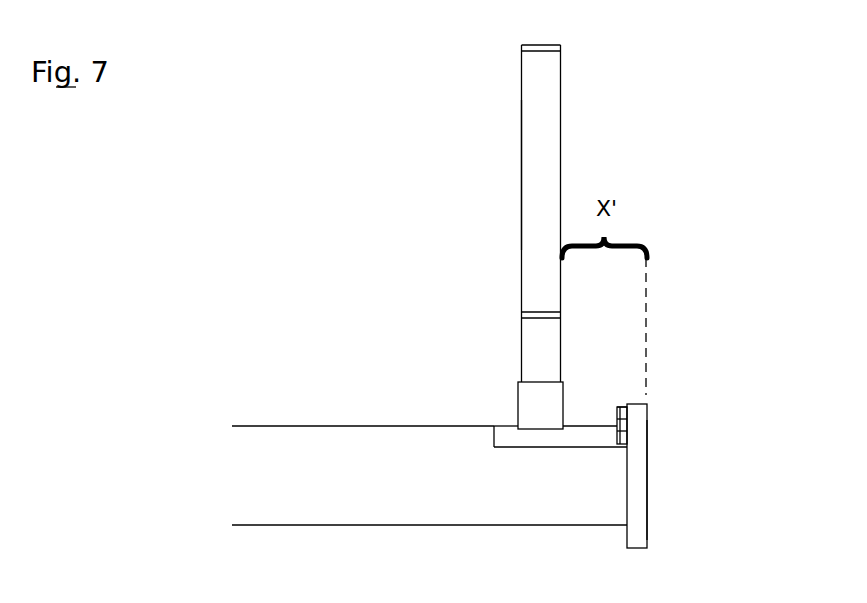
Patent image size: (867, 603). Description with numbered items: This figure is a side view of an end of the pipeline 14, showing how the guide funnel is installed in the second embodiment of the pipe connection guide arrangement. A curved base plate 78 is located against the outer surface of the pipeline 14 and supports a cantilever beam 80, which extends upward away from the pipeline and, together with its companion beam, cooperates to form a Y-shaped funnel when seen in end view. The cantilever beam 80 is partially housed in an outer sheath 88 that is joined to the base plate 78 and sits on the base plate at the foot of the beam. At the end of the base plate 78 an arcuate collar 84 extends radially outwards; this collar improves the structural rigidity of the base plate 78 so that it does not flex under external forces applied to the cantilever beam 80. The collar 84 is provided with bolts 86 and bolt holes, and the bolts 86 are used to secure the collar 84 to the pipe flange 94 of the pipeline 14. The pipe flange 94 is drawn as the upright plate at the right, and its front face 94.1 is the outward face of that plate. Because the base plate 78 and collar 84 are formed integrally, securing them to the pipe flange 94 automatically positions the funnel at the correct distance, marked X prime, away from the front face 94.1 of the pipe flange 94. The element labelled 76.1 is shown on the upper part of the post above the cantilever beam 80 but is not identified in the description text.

The pipeline 14 is at (327, 439).
The post 76.1 is at (561, 150).
The cantilever beam 80 is at (535, 172).
The outer sheath 88 is at (523, 395).
The base plate 78 is at (500, 432).
The collar 84 is at (627, 421).
The bolts 86 is at (623, 407).
The pipe flange 94 is at (637, 440).
The front face 94.1 is at (648, 467).